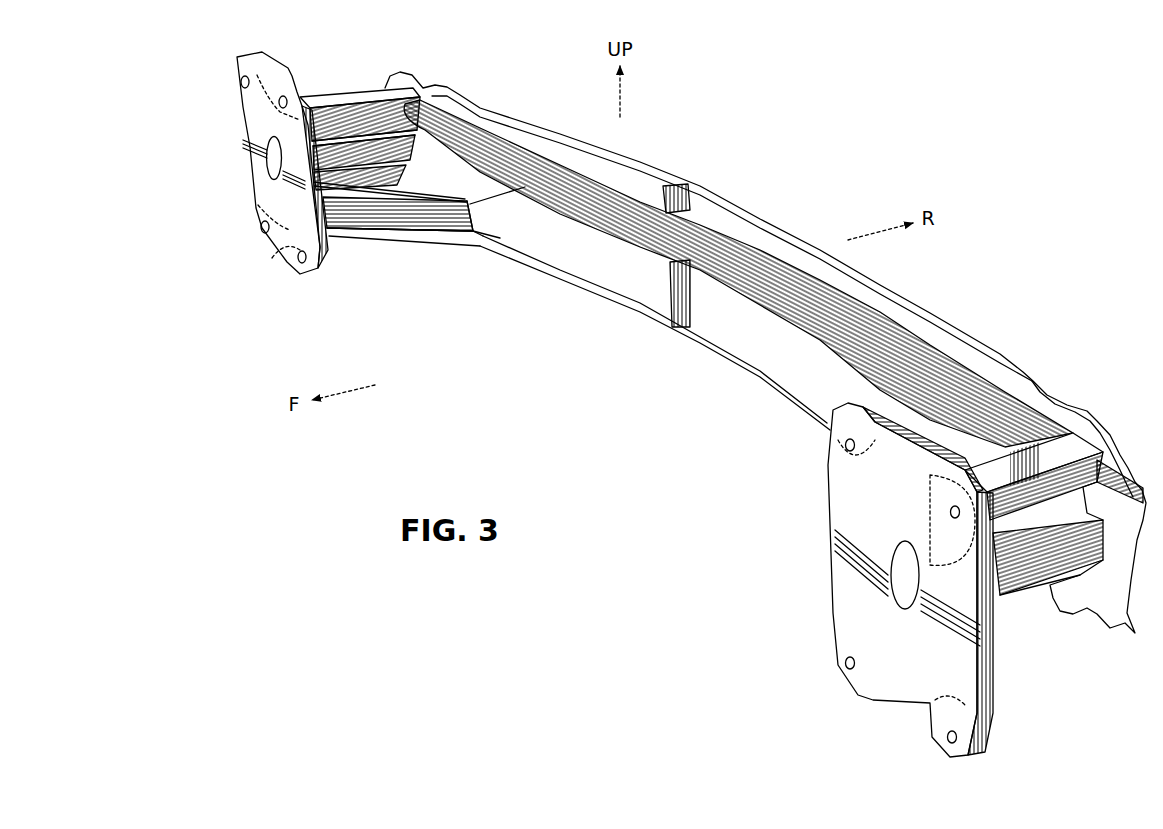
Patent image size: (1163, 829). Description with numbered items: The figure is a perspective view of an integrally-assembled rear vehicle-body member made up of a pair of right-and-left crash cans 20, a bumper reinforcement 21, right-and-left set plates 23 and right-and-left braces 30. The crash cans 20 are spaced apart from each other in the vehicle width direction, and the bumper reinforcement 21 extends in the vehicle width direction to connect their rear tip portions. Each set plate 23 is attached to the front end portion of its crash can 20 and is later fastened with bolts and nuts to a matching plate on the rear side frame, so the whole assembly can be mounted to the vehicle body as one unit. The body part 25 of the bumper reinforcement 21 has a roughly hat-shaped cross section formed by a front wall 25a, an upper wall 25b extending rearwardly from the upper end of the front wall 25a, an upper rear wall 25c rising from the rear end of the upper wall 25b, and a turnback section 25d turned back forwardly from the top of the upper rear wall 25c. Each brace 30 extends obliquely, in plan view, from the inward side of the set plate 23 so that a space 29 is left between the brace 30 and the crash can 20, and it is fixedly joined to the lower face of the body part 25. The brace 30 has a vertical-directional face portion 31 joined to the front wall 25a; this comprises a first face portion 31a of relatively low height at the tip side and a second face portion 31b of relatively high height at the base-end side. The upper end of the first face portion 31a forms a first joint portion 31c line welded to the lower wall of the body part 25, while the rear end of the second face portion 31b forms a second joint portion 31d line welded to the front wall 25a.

The crash can 20 is at (325, 95).
The bumper reinforcement 21 is at (735, 192).
The set plate 23 is at (262, 192).
The body part 25 is at (738, 271).
The front wall 25a is at (602, 272).
The upper wall 25b is at (630, 203).
The upper rear wall 25c is at (777, 243).
The turnback section 25d is at (803, 243).
The space 29 is at (384, 190).
The brace 30 is at (414, 245).
The vertical-directional face portion 31 is at (360, 215).
The first face portion 31a is at (497, 236).
The second face portion 31b is at (382, 222).
The first joint portion 31c is at (480, 233).
The second joint portion 31d is at (480, 207).